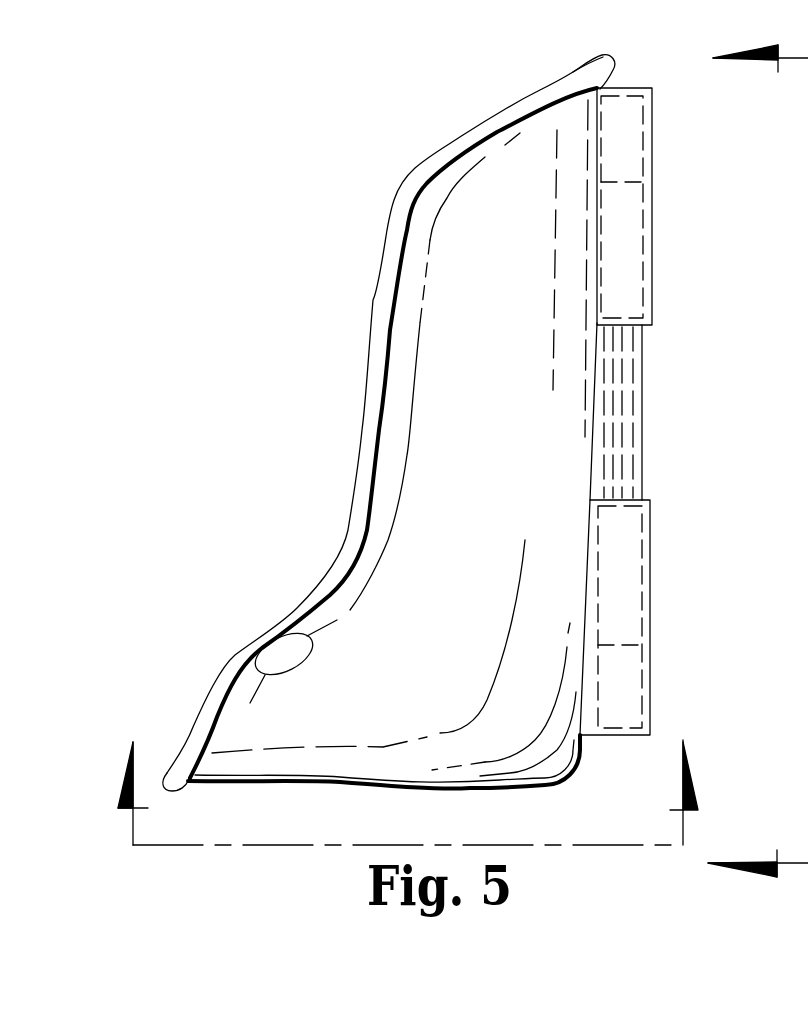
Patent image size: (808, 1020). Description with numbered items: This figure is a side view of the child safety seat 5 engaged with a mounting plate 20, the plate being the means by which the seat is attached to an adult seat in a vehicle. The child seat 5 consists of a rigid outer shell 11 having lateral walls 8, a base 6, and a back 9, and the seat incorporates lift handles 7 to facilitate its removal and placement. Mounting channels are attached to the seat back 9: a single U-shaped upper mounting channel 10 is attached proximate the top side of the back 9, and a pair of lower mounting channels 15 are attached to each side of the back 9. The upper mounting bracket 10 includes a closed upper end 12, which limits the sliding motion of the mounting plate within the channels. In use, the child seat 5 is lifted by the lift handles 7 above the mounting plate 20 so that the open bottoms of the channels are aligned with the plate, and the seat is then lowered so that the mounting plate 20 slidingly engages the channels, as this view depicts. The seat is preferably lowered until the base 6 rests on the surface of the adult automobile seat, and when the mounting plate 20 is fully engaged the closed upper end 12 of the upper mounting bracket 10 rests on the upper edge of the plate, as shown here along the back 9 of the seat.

The child safety seat 5 is at (257, 216).
The base 6 is at (390, 785).
The lift handles 7 is at (267, 664).
The lateral walls 8 is at (360, 423).
The back 9 is at (593, 406).
The upper mounting channel 10 is at (652, 180).
The rigid outer shell 11 is at (500, 184).
The closed upper end 12 is at (627, 84).
The lower mounting channels 15 is at (653, 665).
The mounting plate 20 is at (642, 460).